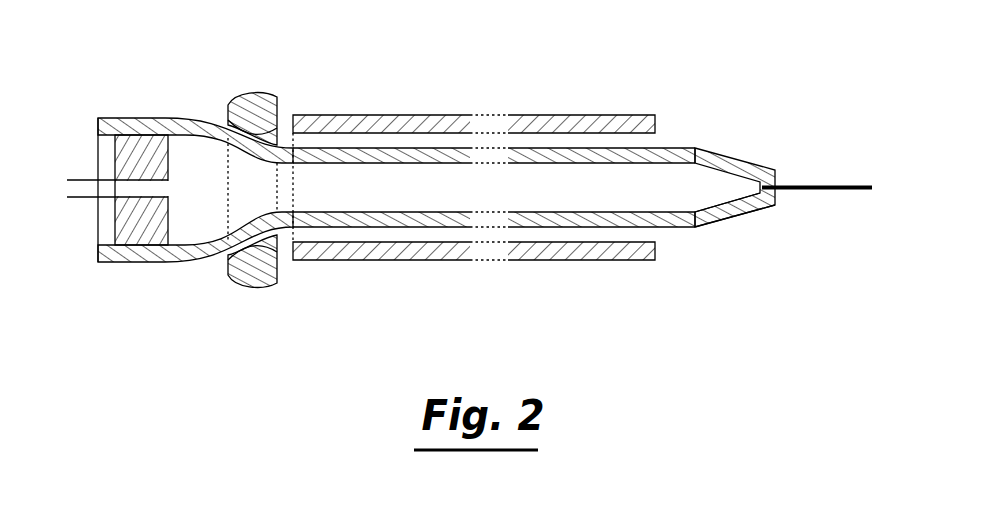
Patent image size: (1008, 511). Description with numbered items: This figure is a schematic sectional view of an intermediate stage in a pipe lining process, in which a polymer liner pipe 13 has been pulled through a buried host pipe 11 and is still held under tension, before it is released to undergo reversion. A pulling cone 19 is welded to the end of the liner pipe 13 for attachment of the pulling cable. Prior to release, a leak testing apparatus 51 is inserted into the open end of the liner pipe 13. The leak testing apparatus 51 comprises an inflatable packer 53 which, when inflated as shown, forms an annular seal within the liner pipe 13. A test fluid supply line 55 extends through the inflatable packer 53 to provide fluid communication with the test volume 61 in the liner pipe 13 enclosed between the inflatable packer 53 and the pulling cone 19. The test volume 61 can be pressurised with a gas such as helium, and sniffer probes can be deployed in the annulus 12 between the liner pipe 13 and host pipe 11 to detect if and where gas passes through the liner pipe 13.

The host pipe 11 is at (588, 120).
The annulus 12 is at (532, 137).
The liner pipe 13 is at (680, 158).
The pulling cone 19 is at (732, 212).
The leak testing apparatus 51 is at (136, 223).
The inflatable packer 53 is at (140, 150).
The test fluid supply line 55 is at (87, 203).
The test volume 61 is at (398, 180).